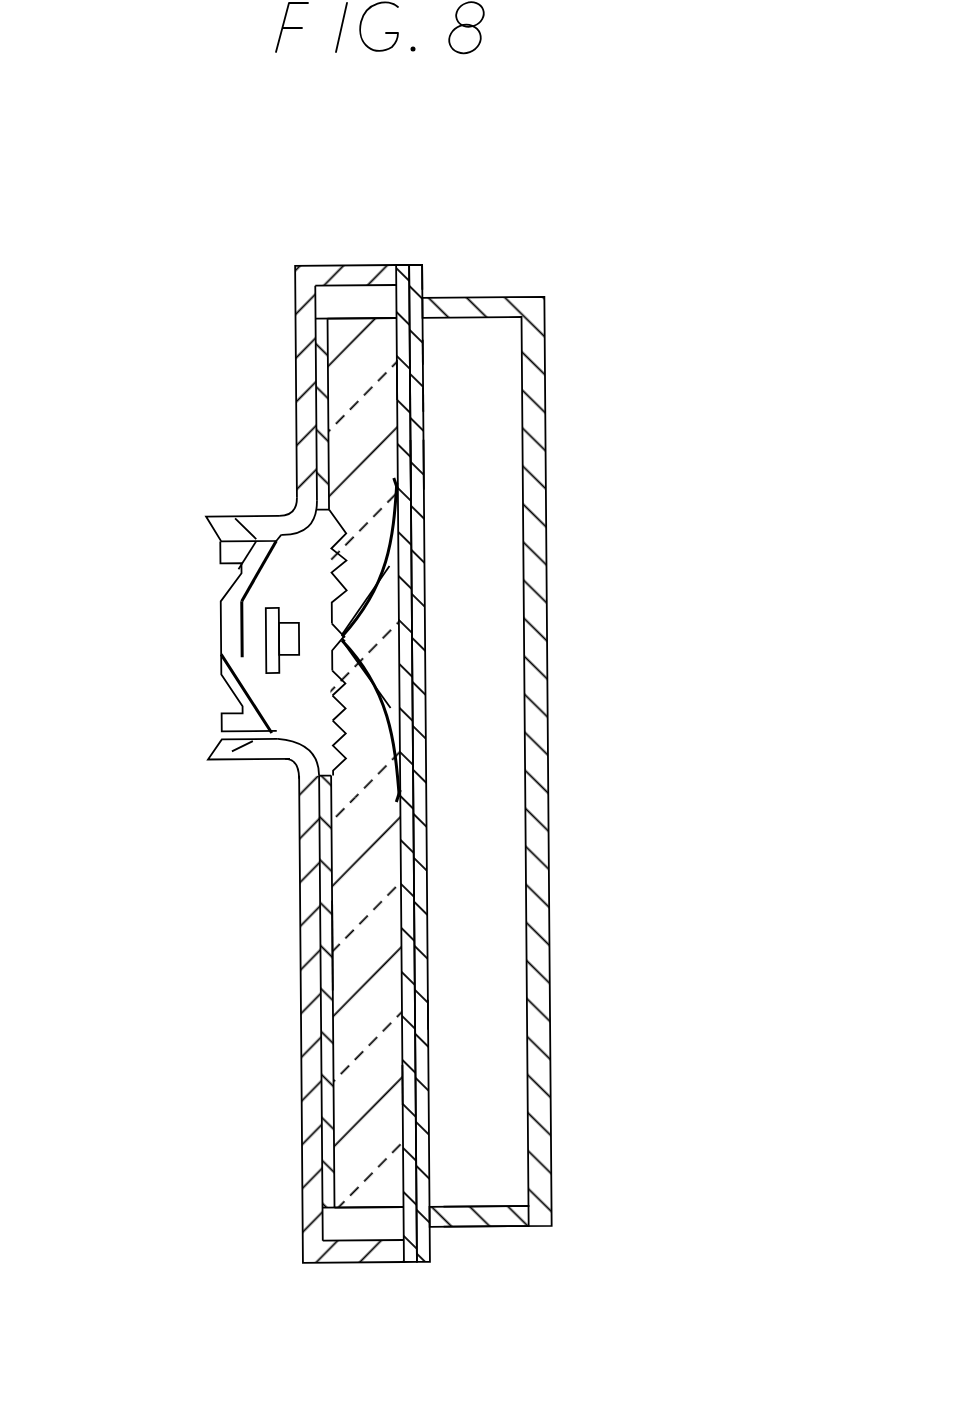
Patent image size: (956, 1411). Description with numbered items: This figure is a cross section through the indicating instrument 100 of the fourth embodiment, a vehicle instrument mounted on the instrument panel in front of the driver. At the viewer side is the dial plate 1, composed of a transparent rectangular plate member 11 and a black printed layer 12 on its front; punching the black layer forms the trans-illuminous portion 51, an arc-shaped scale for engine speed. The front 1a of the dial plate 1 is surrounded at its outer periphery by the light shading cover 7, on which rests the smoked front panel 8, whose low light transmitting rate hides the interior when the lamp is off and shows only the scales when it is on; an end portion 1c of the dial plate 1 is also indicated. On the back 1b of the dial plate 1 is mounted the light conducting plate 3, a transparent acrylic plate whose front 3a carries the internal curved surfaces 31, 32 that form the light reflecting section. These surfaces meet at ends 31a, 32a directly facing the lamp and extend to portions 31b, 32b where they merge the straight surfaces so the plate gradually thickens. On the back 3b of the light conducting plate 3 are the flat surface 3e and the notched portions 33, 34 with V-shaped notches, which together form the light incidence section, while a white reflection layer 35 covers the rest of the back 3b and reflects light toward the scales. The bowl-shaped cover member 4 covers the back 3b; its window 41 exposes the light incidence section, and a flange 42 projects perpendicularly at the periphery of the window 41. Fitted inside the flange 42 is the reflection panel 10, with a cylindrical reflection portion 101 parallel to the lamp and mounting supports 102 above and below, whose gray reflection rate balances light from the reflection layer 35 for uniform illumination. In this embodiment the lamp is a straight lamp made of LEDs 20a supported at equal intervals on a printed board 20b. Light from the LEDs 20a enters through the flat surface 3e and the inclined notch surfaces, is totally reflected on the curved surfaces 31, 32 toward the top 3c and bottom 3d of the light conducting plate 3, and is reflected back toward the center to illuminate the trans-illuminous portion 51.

The dial plate 1 is at (425, 1264).
The front of the dial plate 1a is at (423, 466).
The back of the dial plate 1b is at (395, 381).
The plate upper end 1c is at (411, 262).
The light conducting plate 3 is at (345, 1160).
The front of the light conducting plate 3a is at (420, 1074).
The back of the light conducting plate 3b is at (328, 1076).
The top of the light conducting plate 3c is at (361, 312).
The bottom of the light conducting plate 3d is at (363, 1208).
The flat surface 3e is at (233, 577).
The cover member 4 is at (300, 259).
The light shading cover 7 is at (500, 1228).
The smoked front panel 8 is at (540, 1168).
The reflection panel 10 is at (217, 668).
The plate member 11 is at (423, 352).
The black printed layer 12 is at (420, 400).
The LEDs 20a is at (290, 633).
The printed board 20b is at (270, 643).
The curved surface 31 is at (390, 578).
The upper contact tip 31a is at (343, 634).
The portion away from the lamp 31b is at (402, 489).
The curved surface 32 is at (382, 698).
The lower contact tip 32a is at (523, 666).
The portion away from the lamp 32b is at (400, 795).
The notched portion 33 is at (318, 566).
The notched portion 34 is at (287, 750).
The white reflection layer 35 is at (328, 946).
The window 41 is at (310, 653).
The flange 42 is at (328, 712).
The trans-illuminous portion 51 is at (428, 1015).
The indicating instrument 100 is at (589, 817).
The reflection portion 101 is at (240, 608).
The mounting supports 102 is at (230, 550).